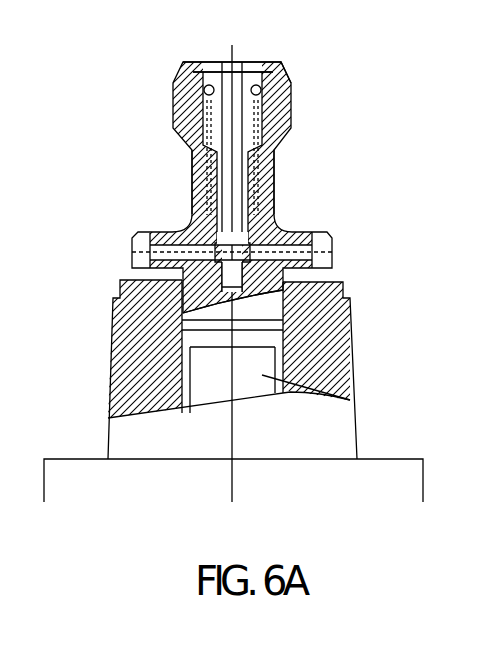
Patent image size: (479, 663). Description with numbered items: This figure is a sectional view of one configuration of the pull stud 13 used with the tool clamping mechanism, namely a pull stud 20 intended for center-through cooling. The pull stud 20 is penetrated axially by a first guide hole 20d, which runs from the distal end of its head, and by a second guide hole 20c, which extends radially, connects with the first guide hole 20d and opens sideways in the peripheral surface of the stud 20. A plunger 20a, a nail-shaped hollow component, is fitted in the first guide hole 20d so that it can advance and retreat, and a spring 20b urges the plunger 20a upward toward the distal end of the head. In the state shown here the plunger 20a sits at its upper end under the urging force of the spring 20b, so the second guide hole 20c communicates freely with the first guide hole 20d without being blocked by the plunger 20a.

The pull stud 13 is at (183, 112).
The pull stud for center-through cooling 20 is at (355, 388).
The plunger 20a is at (253, 52).
The spring 20b is at (253, 172).
The second guide hole 20c is at (312, 252).
The first guide hole 20d is at (265, 290).